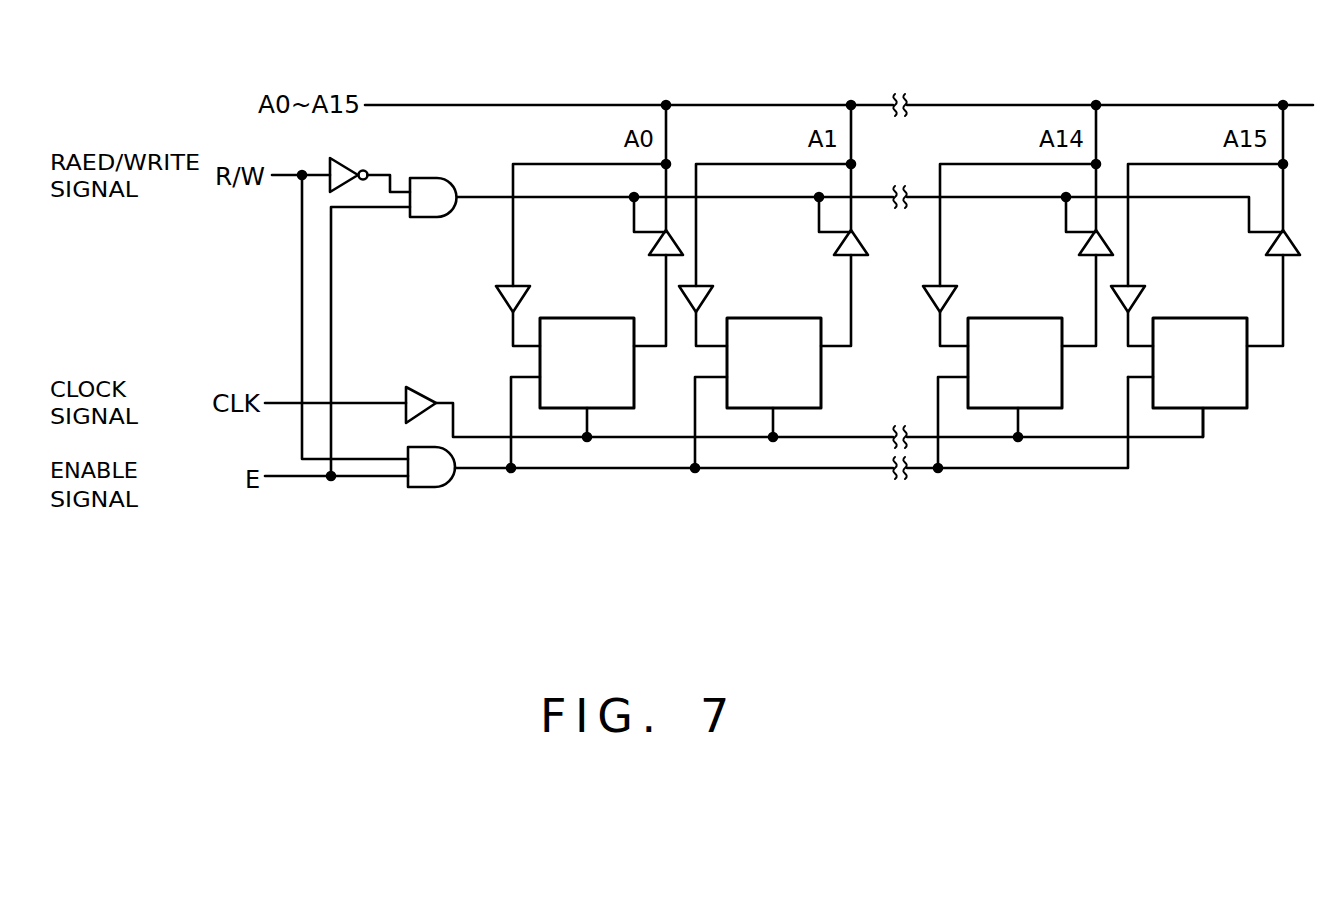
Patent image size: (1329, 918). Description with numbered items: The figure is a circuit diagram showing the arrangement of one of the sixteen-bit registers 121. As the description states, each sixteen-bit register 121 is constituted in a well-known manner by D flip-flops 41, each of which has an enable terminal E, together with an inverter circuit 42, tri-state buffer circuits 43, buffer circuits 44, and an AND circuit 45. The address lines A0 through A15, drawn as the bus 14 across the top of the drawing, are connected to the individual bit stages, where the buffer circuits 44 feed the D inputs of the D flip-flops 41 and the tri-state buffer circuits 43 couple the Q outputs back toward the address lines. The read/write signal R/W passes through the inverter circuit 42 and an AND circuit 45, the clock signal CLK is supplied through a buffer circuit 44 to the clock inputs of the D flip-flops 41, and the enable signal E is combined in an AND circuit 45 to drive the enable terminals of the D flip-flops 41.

The address bus 14 is at (438, 104).
The 16-bit register 121 is at (733, 82).
The D flip-flop 41 is at (578, 317).
The inverter circuit 42 is at (346, 165).
The tri-state buffer circuit 43 is at (655, 259).
The buffer circuit 44 is at (429, 387).
The AND circuit 45 is at (437, 178).